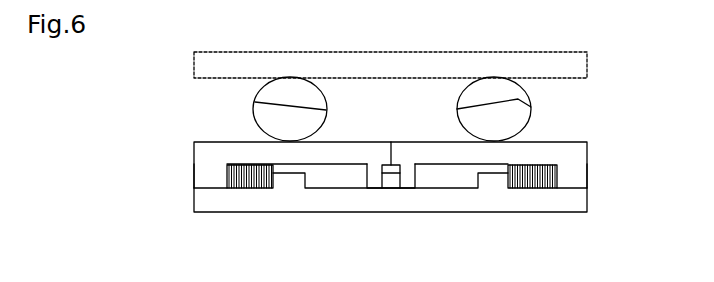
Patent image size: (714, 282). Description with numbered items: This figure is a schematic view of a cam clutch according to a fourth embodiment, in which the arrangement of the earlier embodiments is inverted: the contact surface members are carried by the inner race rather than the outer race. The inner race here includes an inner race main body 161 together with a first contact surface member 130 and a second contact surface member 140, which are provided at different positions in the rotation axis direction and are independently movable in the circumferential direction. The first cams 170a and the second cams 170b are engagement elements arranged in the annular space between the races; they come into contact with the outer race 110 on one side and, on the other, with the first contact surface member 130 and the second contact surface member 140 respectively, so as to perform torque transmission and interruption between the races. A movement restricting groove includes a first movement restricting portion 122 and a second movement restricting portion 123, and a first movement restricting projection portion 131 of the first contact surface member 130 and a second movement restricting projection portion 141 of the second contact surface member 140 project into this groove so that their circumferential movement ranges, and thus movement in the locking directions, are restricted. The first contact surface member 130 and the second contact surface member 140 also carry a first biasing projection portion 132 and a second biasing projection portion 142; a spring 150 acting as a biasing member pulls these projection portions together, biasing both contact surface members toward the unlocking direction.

The outer race 110 is at (220, 60).
The first movement restricting portion 122 is at (381, 186).
The second movement restricting portion 123 is at (401, 184).
The first contact surface member 130 is at (240, 148).
The first movement restricting projection portion 131 is at (382, 181).
The first biasing projection portion 132 is at (215, 174).
The second contact surface member 140 is at (545, 148).
The second movement restricting projection portion 141 is at (415, 173).
The second biasing projection portion 142 is at (557, 181).
The spring 150 is at (245, 183).
The inner race main body 161 is at (235, 200).
The first cams 170a is at (293, 97).
The second cams 170b is at (487, 92).